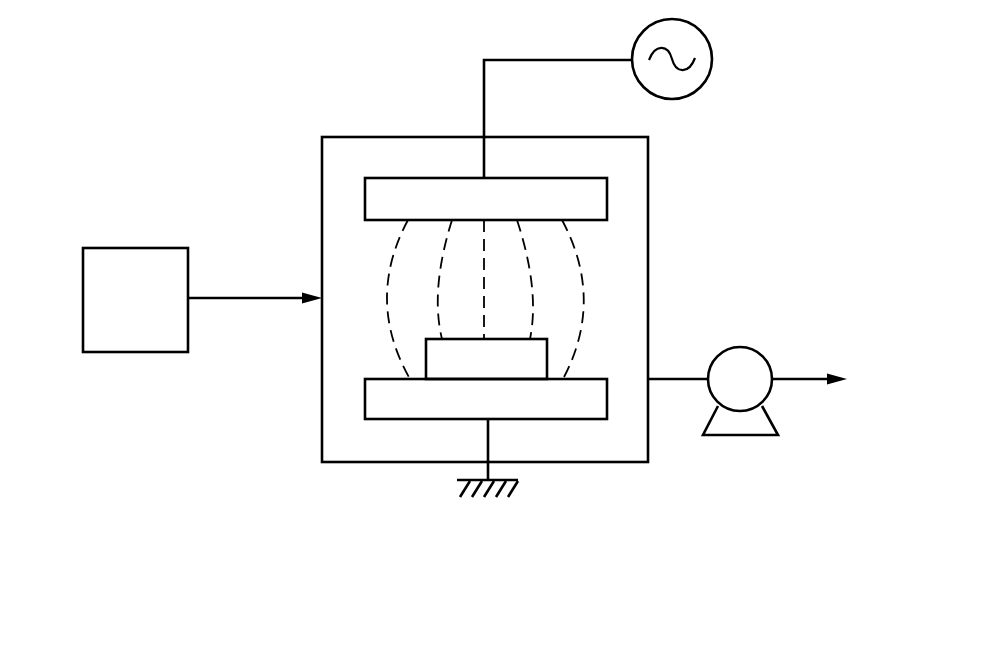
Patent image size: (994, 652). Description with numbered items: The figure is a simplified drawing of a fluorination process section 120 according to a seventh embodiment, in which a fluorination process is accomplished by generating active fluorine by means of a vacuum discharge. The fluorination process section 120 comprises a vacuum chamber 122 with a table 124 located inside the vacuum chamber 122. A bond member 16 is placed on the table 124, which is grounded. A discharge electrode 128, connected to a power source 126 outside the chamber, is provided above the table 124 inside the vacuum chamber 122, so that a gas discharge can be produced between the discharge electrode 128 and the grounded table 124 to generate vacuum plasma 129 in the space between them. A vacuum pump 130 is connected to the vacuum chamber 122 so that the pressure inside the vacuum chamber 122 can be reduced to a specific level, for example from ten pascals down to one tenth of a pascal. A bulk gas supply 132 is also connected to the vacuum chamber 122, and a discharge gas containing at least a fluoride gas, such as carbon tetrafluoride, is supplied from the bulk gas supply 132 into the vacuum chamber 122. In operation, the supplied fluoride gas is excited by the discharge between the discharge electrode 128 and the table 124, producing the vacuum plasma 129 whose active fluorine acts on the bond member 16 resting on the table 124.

The fluorination process section 120 is at (349, 116).
The vacuum chamber 122 is at (322, 393).
The table 124 is at (425, 403).
The power source 126 is at (672, 99).
The discharge electrode 128 is at (548, 178).
The vacuum plasma 129 is at (588, 312).
The vacuum pump 130 is at (740, 347).
The bulk gas supply 132 is at (170, 256).
The bond member 16 is at (517, 368).